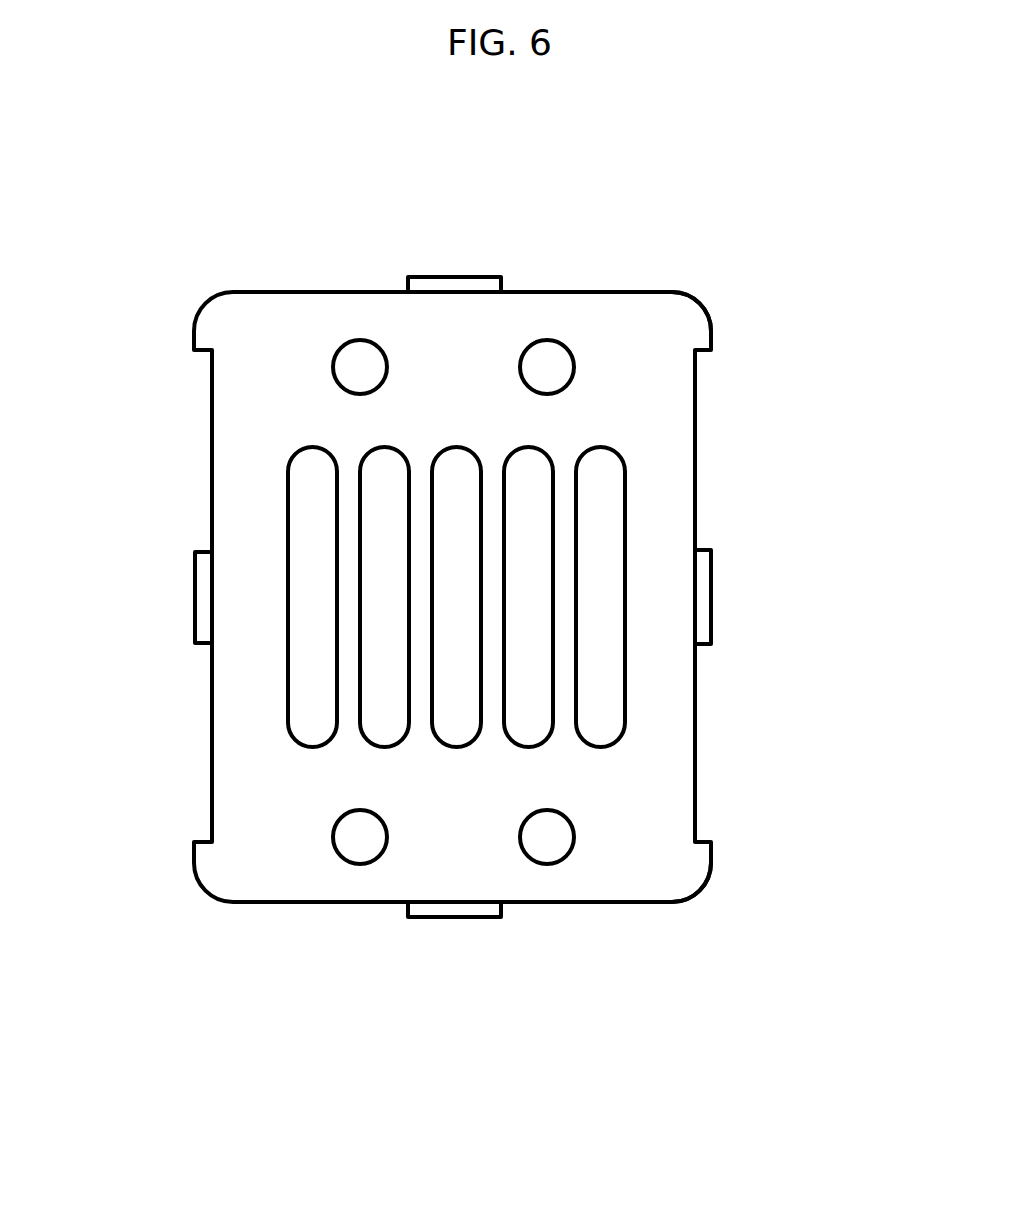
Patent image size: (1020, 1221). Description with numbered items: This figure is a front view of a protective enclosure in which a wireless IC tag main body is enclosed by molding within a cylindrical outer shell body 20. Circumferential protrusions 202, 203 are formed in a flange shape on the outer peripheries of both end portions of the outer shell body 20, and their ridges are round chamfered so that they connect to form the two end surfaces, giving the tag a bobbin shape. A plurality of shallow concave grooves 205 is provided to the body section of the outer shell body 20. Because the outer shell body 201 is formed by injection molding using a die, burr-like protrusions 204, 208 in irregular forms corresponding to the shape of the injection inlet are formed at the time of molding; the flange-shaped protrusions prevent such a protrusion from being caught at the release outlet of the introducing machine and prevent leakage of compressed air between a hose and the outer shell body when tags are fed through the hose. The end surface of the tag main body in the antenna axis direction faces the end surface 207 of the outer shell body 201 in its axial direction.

The outer shell body 20 is at (656, 220).
The outer shell body 201 is at (212, 493).
The circumferential protrusion 202 is at (713, 322).
The circumferential protrusion 203 is at (713, 872).
The burr-like protrusion 204 is at (195, 603).
The shallow concave groove 205 is at (598, 523).
The end surface 207 is at (310, 292).
The burr-like protrusion 208 is at (450, 276).